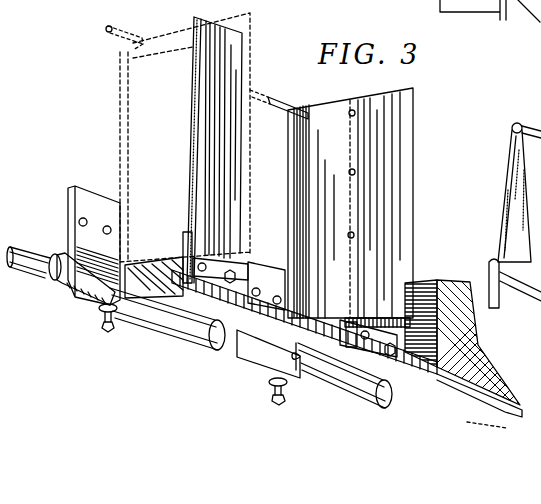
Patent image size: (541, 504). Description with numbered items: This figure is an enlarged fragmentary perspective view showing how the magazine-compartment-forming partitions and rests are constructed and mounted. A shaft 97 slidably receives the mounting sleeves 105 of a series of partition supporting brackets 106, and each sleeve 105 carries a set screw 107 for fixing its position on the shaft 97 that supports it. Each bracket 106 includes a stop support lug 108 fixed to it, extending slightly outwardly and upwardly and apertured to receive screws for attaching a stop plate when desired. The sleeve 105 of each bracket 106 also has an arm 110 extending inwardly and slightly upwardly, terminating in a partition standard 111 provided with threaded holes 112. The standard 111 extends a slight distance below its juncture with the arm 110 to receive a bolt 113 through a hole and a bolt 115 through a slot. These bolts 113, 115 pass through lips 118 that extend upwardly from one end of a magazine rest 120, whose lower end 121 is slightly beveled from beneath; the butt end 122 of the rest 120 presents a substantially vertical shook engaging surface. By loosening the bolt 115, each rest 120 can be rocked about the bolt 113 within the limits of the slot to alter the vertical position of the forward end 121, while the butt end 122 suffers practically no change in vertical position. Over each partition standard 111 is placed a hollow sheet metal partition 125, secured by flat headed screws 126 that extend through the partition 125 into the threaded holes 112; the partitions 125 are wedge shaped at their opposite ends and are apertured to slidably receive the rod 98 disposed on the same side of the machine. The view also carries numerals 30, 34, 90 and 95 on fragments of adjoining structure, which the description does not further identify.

The housing 30 is at (482, 20).
The wall 34 is at (452, 4).
The swing arm 90 is at (500, 296).
The link 95 is at (507, 2).
The shaft 97 is at (45, 270).
The rod 98 is at (105, 33).
The mounting sleeve 105 is at (178, 296).
The partition supporting bracket 106 is at (69, 308).
The set screw 107 is at (106, 332).
The stop support lug 108 is at (72, 190).
The arm 110 is at (150, 318).
The partition standard 111 is at (192, 130).
The threaded hole 112 is at (193, 97).
The bolt 113 is at (183, 283).
The bolt 115 is at (233, 272).
The lip 118 is at (230, 260).
The magazine rest 120 is at (218, 310).
The lower end 121 is at (333, 363).
The butt end 122 is at (180, 290).
The partition 125 is at (133, 80).
The flat headed screw 126 is at (353, 235).